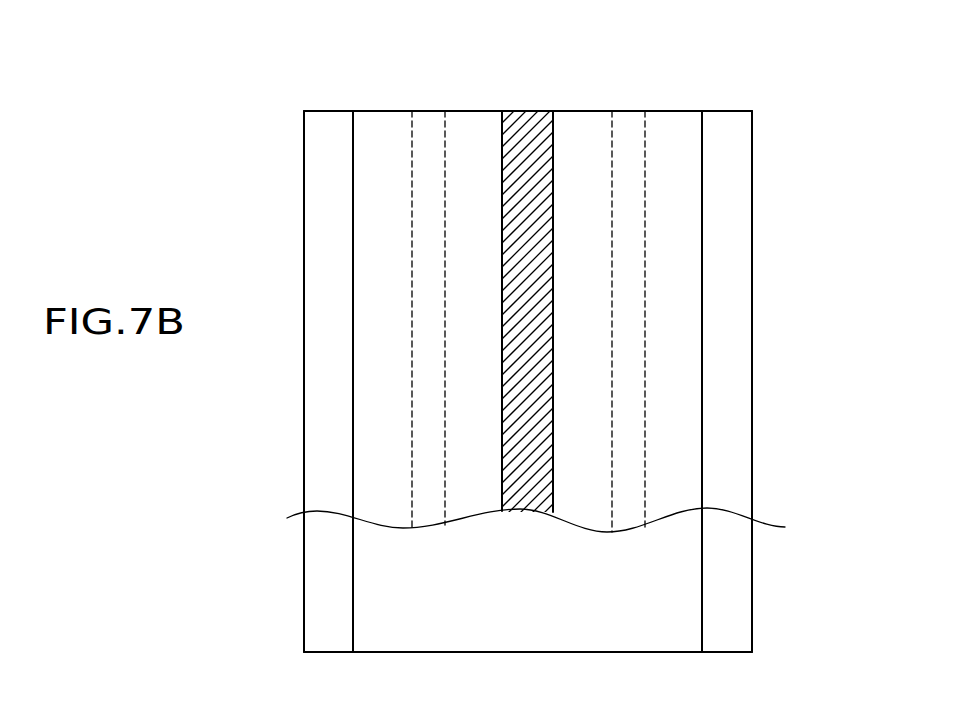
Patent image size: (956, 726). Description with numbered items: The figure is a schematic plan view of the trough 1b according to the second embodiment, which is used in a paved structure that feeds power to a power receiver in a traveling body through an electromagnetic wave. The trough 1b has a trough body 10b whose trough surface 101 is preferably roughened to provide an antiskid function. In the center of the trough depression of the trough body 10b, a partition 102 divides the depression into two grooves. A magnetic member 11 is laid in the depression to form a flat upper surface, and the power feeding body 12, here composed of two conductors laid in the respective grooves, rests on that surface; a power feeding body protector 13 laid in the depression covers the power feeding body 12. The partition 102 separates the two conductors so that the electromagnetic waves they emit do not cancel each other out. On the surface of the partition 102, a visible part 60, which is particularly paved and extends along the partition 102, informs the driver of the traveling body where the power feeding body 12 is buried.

The trough 1b is at (801, 101).
The trough body 10b is at (304, 276).
The magnetic member 11 is at (435, 623).
The trough surface 101 is at (318, 378).
The power feeding body protector 13 is at (667, 445).
The power feeding body 12 is at (432, 125).
The partition 102 is at (530, 111).
The visible part 60 is at (535, 142).